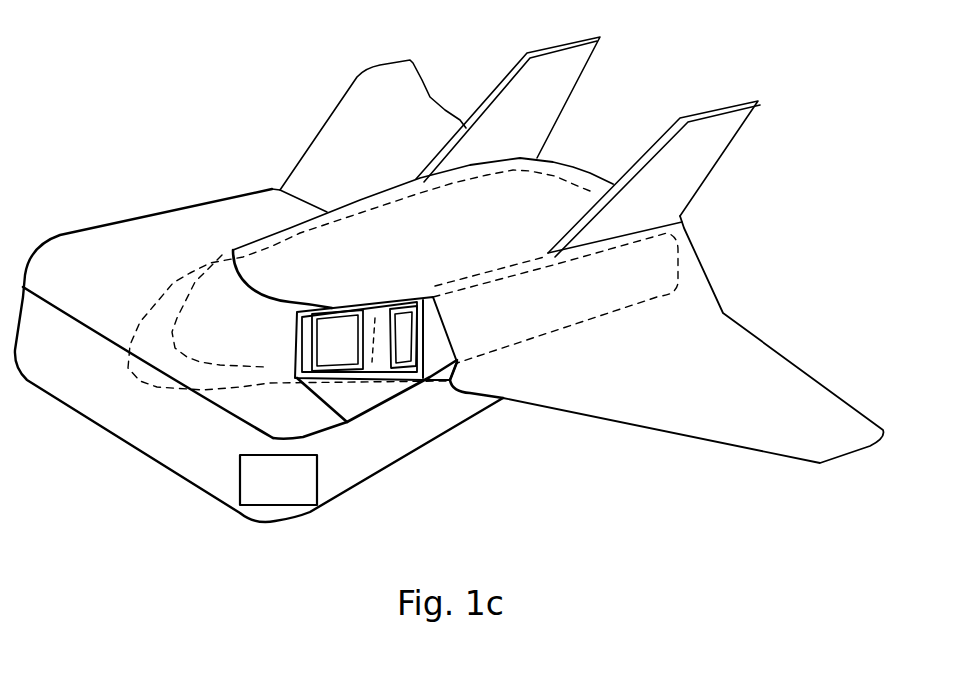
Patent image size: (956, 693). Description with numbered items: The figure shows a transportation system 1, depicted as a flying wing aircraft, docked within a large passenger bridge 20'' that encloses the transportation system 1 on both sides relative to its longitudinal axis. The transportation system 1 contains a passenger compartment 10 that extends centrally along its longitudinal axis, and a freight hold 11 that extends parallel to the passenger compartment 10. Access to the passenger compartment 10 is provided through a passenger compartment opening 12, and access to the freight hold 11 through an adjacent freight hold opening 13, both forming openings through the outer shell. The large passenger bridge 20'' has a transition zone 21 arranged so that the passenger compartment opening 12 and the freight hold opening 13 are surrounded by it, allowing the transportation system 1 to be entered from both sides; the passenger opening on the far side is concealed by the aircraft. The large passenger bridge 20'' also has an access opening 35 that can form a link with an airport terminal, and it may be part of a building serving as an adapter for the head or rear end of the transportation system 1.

The transportation system 1 is at (588, 166).
The passenger compartment 10 is at (172, 338).
The freight hold 11 is at (687, 234).
The passenger compartment opening 12 is at (345, 312).
The freight hold opening 13 is at (412, 308).
The large passenger bridge 20'' is at (329, 139).
The transition zone 21 is at (298, 375).
The access opening 35 is at (287, 489).